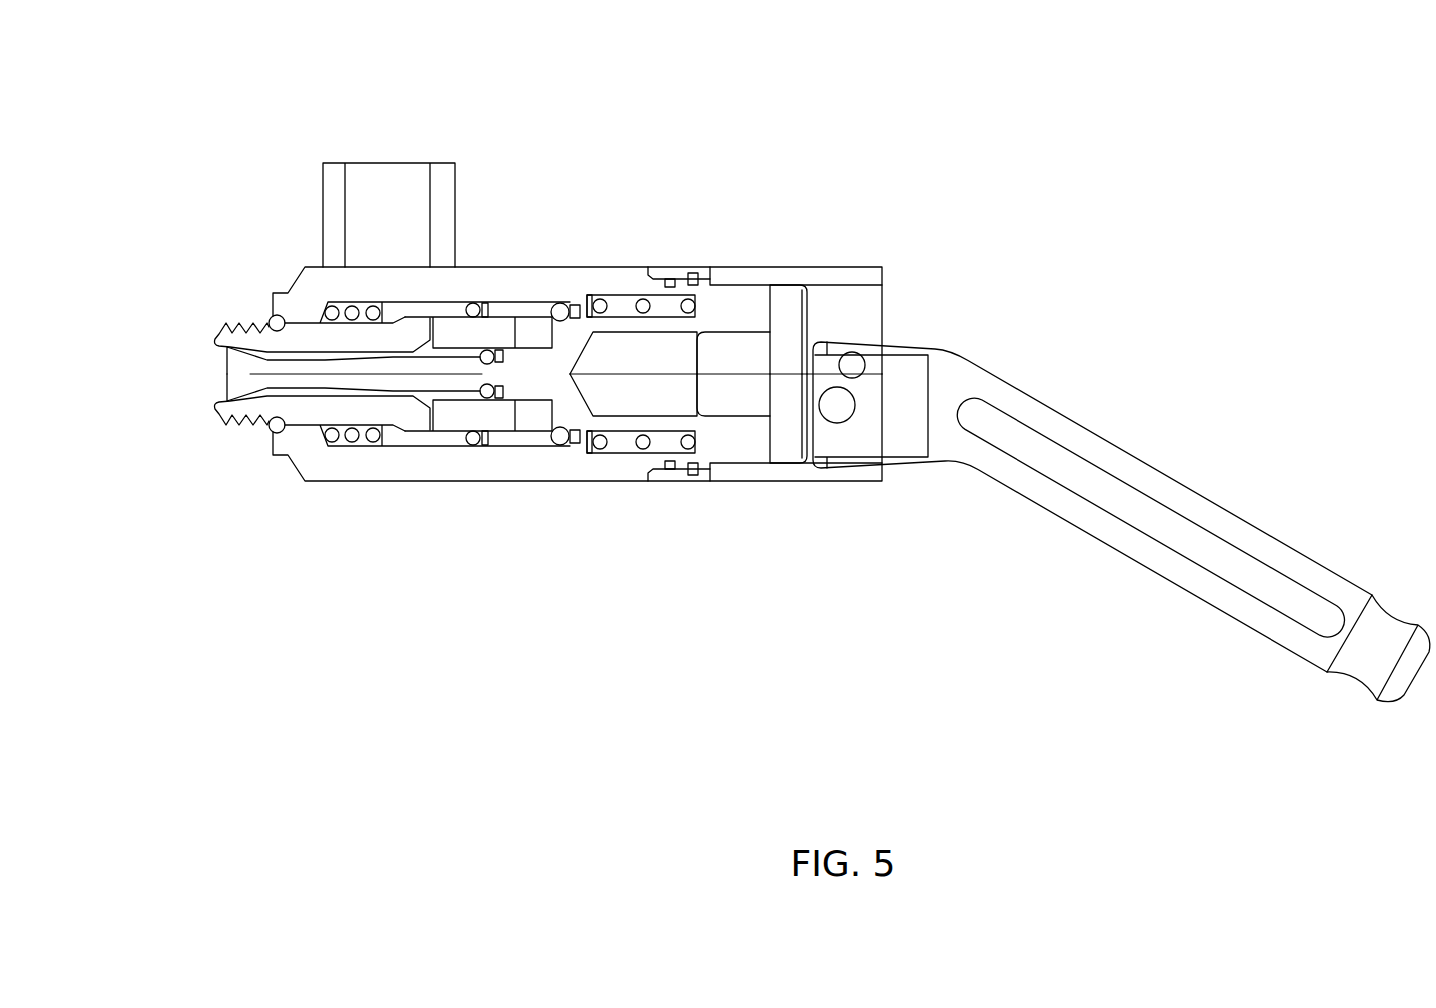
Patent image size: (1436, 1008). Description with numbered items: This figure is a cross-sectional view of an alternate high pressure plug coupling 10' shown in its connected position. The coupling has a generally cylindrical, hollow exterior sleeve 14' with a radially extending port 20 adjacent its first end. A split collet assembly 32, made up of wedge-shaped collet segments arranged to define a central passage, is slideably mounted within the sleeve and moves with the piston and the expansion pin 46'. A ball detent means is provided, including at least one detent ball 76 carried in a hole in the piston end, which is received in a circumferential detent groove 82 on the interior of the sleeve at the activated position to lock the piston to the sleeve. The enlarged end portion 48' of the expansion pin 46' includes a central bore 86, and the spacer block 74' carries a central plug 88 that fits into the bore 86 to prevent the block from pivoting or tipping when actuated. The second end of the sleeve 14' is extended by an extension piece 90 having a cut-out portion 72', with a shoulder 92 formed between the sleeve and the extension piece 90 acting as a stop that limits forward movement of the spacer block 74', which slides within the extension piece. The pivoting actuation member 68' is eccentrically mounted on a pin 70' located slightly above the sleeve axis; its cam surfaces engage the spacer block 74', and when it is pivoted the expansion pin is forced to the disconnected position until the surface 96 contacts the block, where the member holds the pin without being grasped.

The high pressure plug coupling 10' is at (768, 378).
The sleeve 14' is at (575, 278).
The port 20 is at (335, 192).
The split collet assembly 32 is at (206, 414).
The expansion pin 46' is at (427, 454).
The enlarged end portion 48' is at (534, 243).
The actuation member 68' is at (1121, 514).
The pin 70' is at (933, 297).
The cut-out portion 72' is at (841, 517).
The spacer block 74' is at (825, 294).
The detent ball 76 is at (560, 436).
The detent groove 82 is at (540, 300).
The central bore 86 is at (637, 390).
The central plug 88 is at (738, 388).
The extension piece 90 is at (742, 267).
The shoulder 92 is at (712, 282).
The surface 96 is at (868, 460).